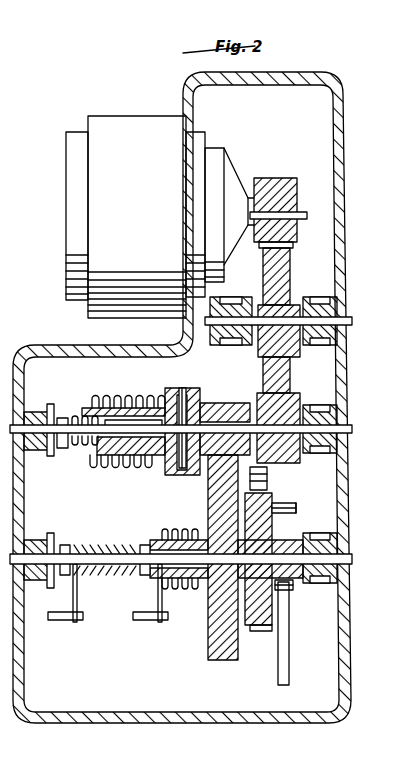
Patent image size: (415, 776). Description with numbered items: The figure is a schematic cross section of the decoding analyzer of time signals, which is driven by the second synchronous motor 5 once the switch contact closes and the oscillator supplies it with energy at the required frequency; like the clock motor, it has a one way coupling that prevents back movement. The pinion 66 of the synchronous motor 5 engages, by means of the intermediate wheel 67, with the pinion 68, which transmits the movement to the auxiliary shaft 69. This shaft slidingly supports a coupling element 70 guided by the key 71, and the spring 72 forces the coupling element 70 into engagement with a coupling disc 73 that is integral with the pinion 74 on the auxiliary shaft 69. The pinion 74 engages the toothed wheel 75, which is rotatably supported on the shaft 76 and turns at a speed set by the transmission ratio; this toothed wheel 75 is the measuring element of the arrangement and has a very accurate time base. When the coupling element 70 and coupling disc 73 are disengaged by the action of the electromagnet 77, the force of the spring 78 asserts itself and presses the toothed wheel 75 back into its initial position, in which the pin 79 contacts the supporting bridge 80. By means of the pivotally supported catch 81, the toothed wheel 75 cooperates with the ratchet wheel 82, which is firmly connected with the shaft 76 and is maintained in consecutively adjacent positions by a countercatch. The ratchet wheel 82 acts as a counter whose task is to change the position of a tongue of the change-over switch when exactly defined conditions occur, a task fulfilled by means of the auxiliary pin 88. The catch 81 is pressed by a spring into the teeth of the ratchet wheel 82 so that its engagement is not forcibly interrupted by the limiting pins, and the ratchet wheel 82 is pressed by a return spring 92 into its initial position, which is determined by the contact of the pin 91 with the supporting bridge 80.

The second synchronous motor 5 is at (129, 123).
The pinion 66 is at (276, 186).
The intermediate wheel 67 is at (279, 270).
The pinion 68 is at (301, 398).
The auxiliary shaft 69 is at (61, 418).
The coupling element 70 is at (177, 400).
The key 71 is at (120, 427).
The spring 72 is at (76, 447).
The coupling disc 73 is at (197, 392).
The pinion 74 is at (222, 406).
The toothed wheel 75 is at (212, 516).
The shaft 76 is at (353, 558).
The electromagnet 77 is at (127, 463).
The spring 78 is at (187, 578).
The pin 79 is at (287, 503).
The supporting bridge 80 is at (286, 652).
The catch 81 is at (268, 480).
The ratchet wheel 82 is at (266, 628).
The auxiliary pin 88 is at (297, 510).
The pin 91 is at (294, 588).
The return spring 92 is at (115, 574).